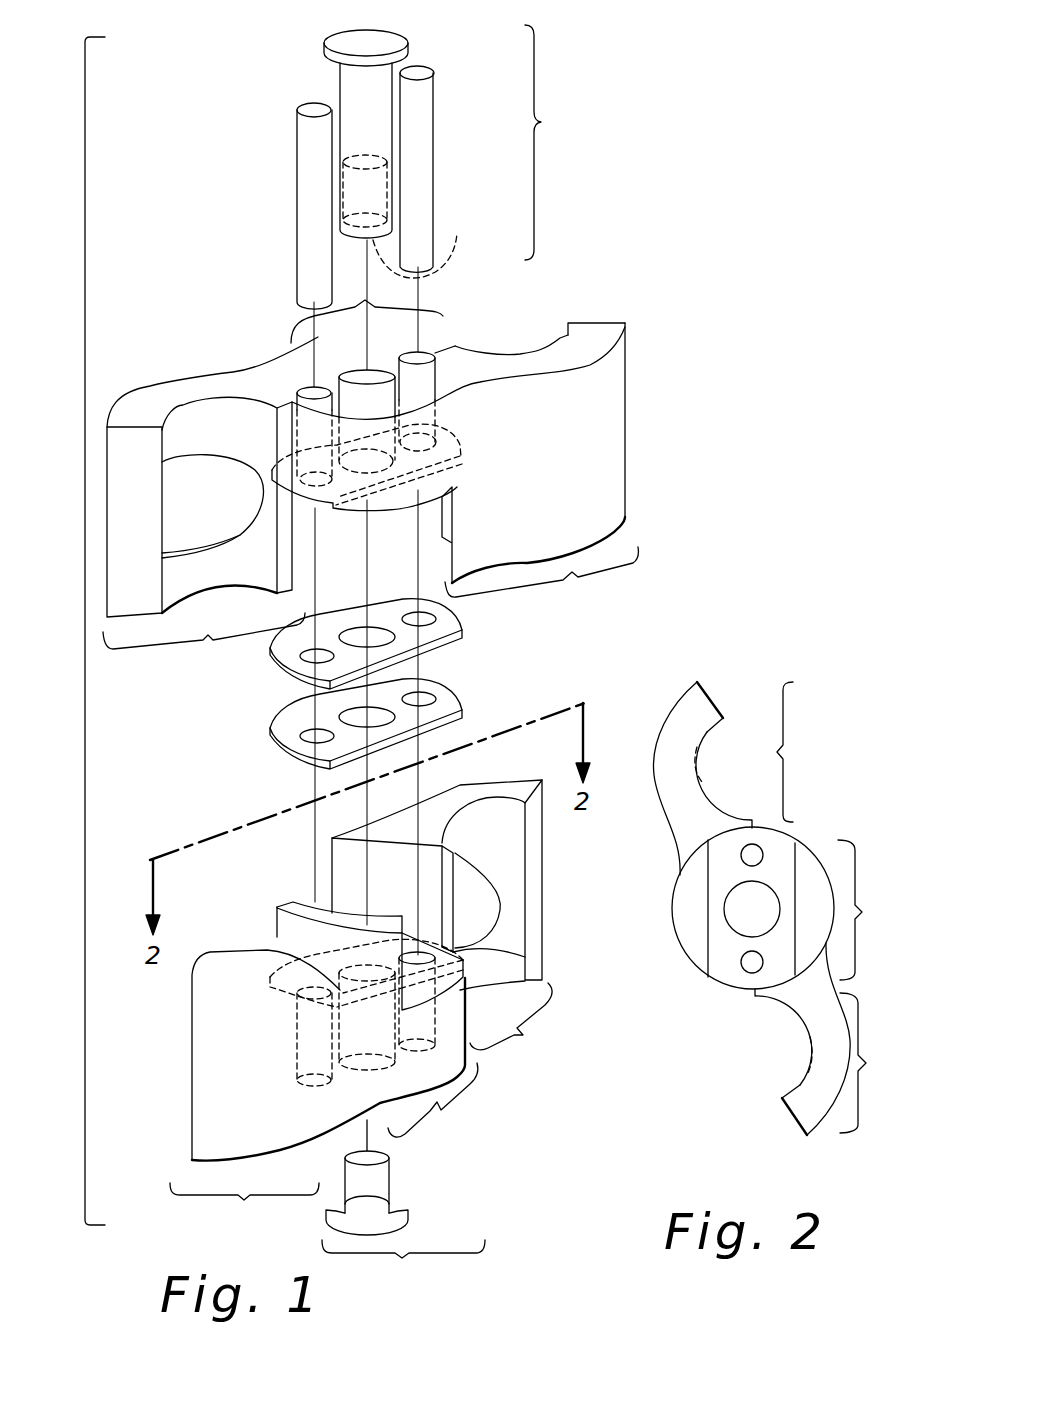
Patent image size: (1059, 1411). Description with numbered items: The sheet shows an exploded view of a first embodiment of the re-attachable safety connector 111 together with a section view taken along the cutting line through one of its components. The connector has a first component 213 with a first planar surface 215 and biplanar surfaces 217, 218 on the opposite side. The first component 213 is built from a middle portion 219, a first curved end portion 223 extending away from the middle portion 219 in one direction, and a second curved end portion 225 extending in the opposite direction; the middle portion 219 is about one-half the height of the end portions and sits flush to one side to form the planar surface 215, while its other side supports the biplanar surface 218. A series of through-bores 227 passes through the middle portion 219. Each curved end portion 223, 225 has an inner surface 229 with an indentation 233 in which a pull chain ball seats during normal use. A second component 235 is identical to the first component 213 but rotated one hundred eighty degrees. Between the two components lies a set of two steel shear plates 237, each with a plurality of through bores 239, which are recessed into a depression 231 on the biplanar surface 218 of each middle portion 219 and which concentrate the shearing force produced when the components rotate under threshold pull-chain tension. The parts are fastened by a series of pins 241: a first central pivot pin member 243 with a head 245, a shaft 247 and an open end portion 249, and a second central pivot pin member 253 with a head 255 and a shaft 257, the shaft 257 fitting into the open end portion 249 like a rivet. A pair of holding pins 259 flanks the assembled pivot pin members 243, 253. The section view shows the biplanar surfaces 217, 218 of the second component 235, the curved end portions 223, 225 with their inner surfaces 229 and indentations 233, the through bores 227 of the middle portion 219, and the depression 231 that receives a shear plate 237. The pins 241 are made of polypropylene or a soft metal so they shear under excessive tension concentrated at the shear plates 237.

In FIG. 1, the re-attachable safety connector (first embodiment) 111 is at (85, 683).
In FIG. 1, the first component 213 is at (655, 431).
In FIG. 1, the first planar surface 215 is at (600, 323).
In FIG. 1, the biplanar surface 217 is at (345, 582).
In FIG. 2, the biplanar surface 217 is at (700, 698).
In FIG. 1, the biplanar surface 218 is at (447, 987).
In FIG. 2, the biplanar surface 218 is at (817, 880).
In FIG. 1, the middle portion 219 is at (397, 707).
In FIG. 1, the first curved end portion 223 is at (284, 923).
In FIG. 2, the first curved end portion 223 is at (812, 752).
In FIG. 1, the second curved end portion 225 is at (541, 802).
In FIG. 2, the second curved end portion 225 is at (882, 1063).
In FIG. 1, the through-bores 227 is at (419, 360).
In FIG. 2, the through-bores 227 is at (741, 960).
In FIG. 1, the inner surface 229 is at (206, 418).
In FIG. 2, the inner surface 229 is at (702, 781).
In FIG. 1, the depression 231 is at (302, 495).
In FIG. 2, the depression 231 is at (783, 848).
In FIG. 1, the indentation 233 is at (177, 480).
In FIG. 2, the indentation 233 is at (700, 752).
In FIG. 1, the second component 235 is at (170, 1118).
In FIG. 2, the second component 235 is at (850, 823).
In FIG. 1, the shear plates 237 is at (461, 638).
In FIG. 1, the through bores 239 is at (297, 668).
In FIG. 1, the series of pins 241 is at (563, 142).
In FIG. 1, the first central pivot pin member 243 is at (312, 30).
In FIG. 1, the head 245 is at (388, 42).
In FIG. 1, the shaft 247 is at (340, 88).
In FIG. 1, the open end portion 249 is at (466, 233).
In FIG. 1, the second central pivot pin member 253 is at (403, 1268).
In FIG. 1, the head 255 is at (408, 1212).
In FIG. 1, the shaft 257 is at (390, 1178).
In FIG. 1, the holding pins 259 is at (297, 162).